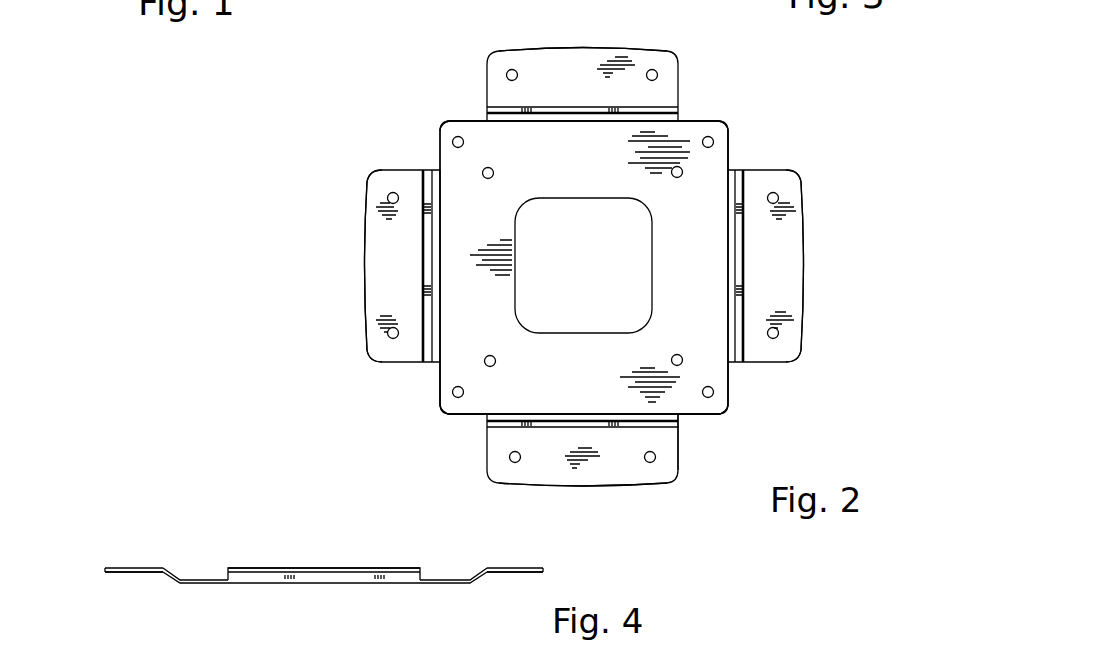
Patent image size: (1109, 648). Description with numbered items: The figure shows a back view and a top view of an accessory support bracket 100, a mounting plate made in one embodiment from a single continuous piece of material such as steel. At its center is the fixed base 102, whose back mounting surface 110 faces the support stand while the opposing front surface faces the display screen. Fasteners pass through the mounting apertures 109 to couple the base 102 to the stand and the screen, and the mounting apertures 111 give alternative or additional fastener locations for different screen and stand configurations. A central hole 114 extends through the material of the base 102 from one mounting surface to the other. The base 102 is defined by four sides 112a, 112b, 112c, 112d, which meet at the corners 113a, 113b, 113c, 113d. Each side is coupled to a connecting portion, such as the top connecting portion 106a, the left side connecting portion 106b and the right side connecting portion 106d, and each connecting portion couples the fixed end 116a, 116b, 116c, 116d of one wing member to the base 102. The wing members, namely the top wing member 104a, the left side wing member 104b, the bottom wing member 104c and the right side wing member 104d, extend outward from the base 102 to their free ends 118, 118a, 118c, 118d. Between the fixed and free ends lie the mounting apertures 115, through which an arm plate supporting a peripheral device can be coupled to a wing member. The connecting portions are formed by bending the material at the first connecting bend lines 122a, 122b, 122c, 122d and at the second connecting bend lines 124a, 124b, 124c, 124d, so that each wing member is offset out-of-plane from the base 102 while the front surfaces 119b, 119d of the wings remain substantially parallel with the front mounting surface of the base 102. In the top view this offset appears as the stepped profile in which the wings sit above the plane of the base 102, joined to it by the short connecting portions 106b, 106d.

In FIG. 2, the accessory support bracket 100 is at (783, 110).
In FIG. 4, the accessory support bracket 100 is at (230, 536).
In FIG. 2, the base 102 is at (450, 119).
In FIG. 4, the base 102 is at (182, 588).
In FIG. 2, the top wing member 104a is at (638, 48).
In FIG. 4, the top wing member 104a is at (320, 570).
In FIG. 2, the left side wing member 104b is at (804, 240).
In FIG. 4, the left side wing member 104b is at (107, 562).
In FIG. 2, the bottom wing member 104c is at (642, 487).
In FIG. 2, the right side wing member 104d is at (365, 253).
In FIG. 4, the right side wing member 104d is at (487, 562).
In FIG. 2, the top connecting portion 106a is at (541, 116).
In FIG. 2, the left side connecting portion 106b is at (584, 418).
In FIG. 4, the left side connecting portion 106b is at (165, 586).
In FIG. 2, the right side connecting portion 106d is at (435, 226).
In FIG. 4, the right side connecting portion 106d is at (470, 586).
In FIG. 2, the mounting apertures 109 is at (464, 146).
In FIG. 2, the back mounting surface 110 is at (589, 178).
In FIG. 2, the mounting apertures 111 is at (492, 178).
In FIG. 2, the top side 112a is at (690, 118).
In FIG. 2, the left side 112b is at (729, 387).
In FIG. 2, the side 112c is at (700, 413).
In FIG. 2, the right side 112d is at (440, 379).
In FIG. 2, the corner 113a is at (720, 122).
In FIG. 2, the corner 113b is at (722, 408).
In FIG. 2, the corner 113c is at (440, 402).
In FIG. 2, the corner 113d is at (443, 127).
In FIG. 2, the central hole 114 is at (652, 308).
In FIG. 2, the mounting apertures 115 is at (518, 69).
In FIG. 2, the fixed end 116a is at (540, 109).
In FIG. 2, the fixed end 116b is at (423, 283).
In FIG. 2, the fixed end 116c is at (588, 426).
In FIG. 2, the fixed end 116d is at (745, 255).
In FIG. 2, the free end 118 is at (368, 224).
In FIG. 2, the free end 118a is at (584, 47).
In FIG. 2, the free end 118c is at (608, 486).
In FIG. 2, the free end 118d is at (803, 268).
In FIG. 4, the front surface 119b is at (148, 573).
In FIG. 4, the front surface 119d is at (500, 573).
In FIG. 2, the first connecting bend line 122a is at (596, 122).
In FIG. 2, the first connecting bend line 122b is at (439, 276).
In FIG. 2, the first connecting bend line 122c is at (561, 412).
In FIG. 2, the first connecting bend line 122d is at (735, 299).
In FIG. 2, the second connecting bend line 124a is at (608, 109).
In FIG. 2, the second connecting bend line 124b is at (423, 242).
In FIG. 2, the second connecting bend line 124c is at (632, 427).
In FIG. 2, the second connecting bend line 124d is at (746, 286).